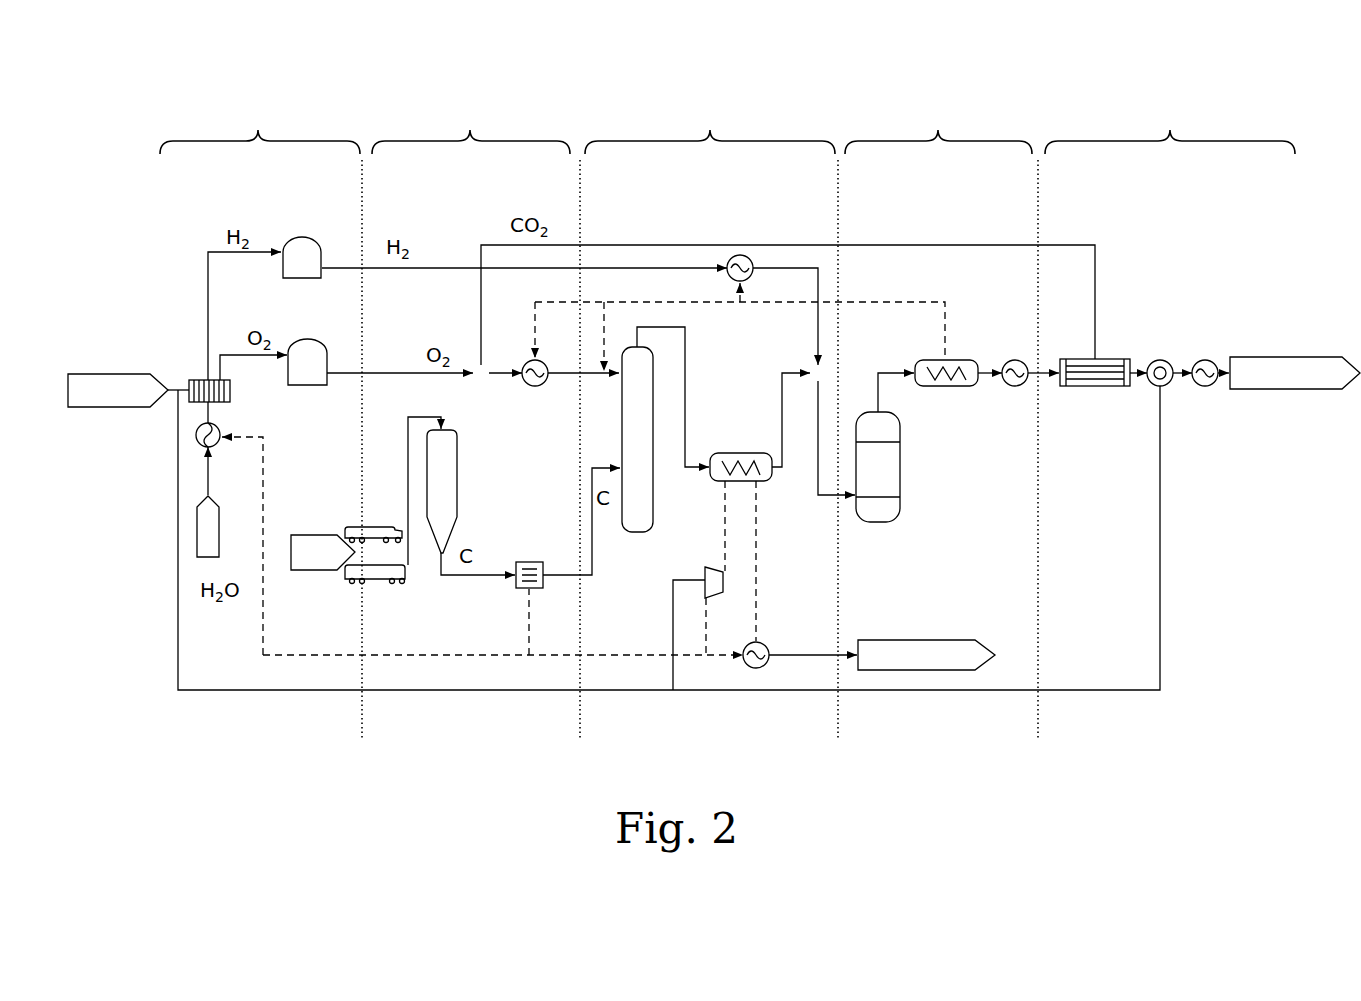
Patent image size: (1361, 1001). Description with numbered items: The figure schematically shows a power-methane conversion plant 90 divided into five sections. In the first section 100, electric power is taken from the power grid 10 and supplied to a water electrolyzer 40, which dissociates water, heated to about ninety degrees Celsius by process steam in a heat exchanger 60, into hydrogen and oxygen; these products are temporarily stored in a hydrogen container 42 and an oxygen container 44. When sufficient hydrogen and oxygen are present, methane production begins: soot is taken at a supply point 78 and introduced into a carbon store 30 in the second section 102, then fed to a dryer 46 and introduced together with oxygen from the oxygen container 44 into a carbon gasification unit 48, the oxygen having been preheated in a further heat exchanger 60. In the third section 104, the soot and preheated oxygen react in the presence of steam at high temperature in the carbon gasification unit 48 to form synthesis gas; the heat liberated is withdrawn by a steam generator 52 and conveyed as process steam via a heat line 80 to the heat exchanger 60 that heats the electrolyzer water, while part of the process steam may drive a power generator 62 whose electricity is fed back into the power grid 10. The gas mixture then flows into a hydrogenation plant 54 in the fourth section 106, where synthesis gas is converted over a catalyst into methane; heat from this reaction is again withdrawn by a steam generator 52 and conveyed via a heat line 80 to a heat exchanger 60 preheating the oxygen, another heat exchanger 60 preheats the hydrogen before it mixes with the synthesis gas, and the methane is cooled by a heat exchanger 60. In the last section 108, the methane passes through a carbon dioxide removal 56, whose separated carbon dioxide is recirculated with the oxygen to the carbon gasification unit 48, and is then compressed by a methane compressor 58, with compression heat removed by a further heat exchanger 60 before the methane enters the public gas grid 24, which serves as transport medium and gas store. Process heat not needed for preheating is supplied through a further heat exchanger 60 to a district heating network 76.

The power-methane conversion plant 90 is at (118, 147).
The first section 100 is at (260, 127).
The second section 102 is at (471, 127).
The third section 104 is at (710, 127).
The fourth section 106 is at (938, 127).
The last section 108 is at (1170, 127).
The power grid 10 is at (99, 402).
The water electrolyzer 40 is at (203, 380).
The hydrogen container 42 is at (307, 237).
The oxygen container 44 is at (318, 340).
The heat exchanger 60 is at (745, 255).
The carbon store 30 is at (457, 495).
The supply point 78 is at (304, 564).
The dryer 46 is at (525, 562).
The carbon gasification unit 48 is at (653, 500).
The steam generator 52 is at (740, 453).
The power generator 62 is at (705, 575).
The heat line 80 is at (925, 300).
The hydrogenation plant 54 is at (878, 522).
The district heating network 76 is at (909, 667).
The carbon dioxide removal 56 is at (1095, 386).
The methane compressor 58 is at (1163, 360).
The public gas grid 24 is at (1279, 385).